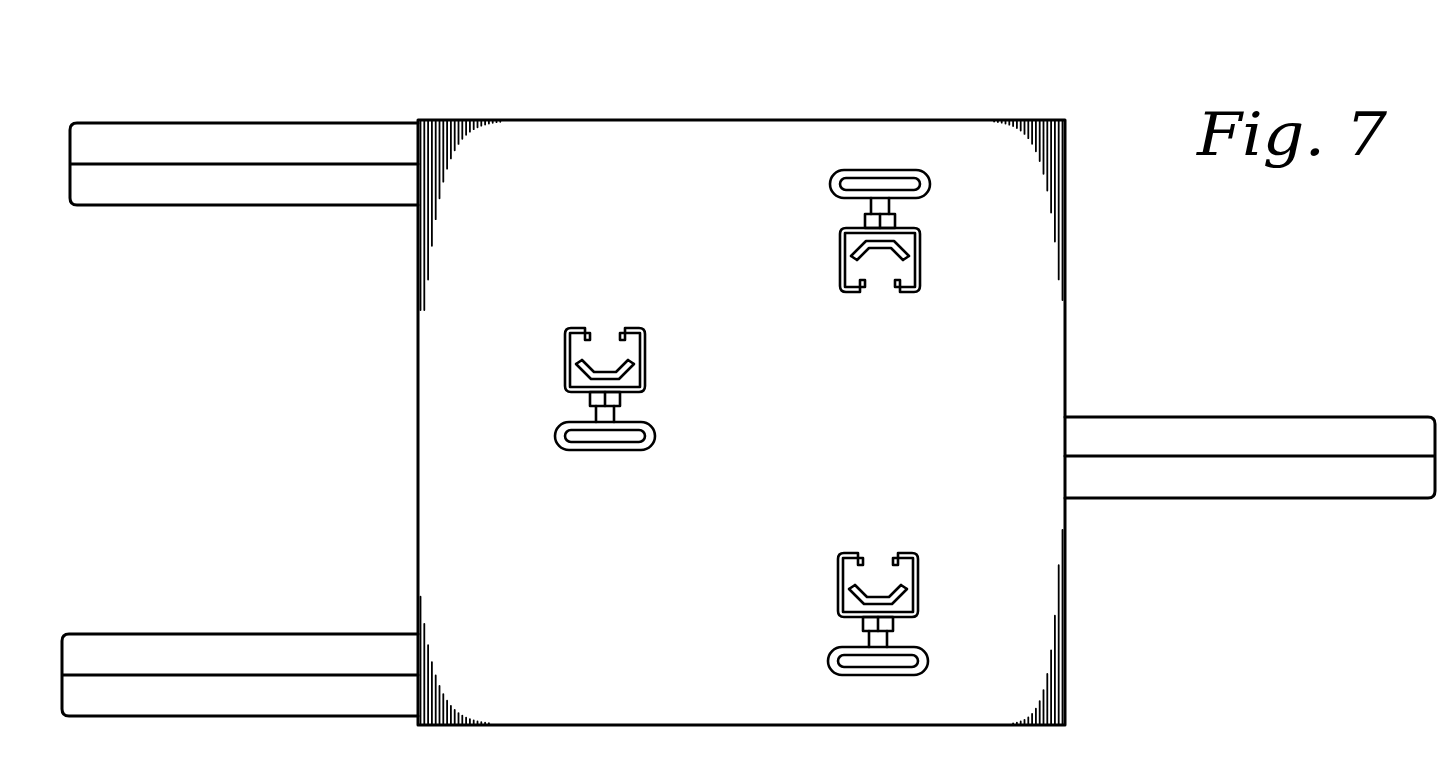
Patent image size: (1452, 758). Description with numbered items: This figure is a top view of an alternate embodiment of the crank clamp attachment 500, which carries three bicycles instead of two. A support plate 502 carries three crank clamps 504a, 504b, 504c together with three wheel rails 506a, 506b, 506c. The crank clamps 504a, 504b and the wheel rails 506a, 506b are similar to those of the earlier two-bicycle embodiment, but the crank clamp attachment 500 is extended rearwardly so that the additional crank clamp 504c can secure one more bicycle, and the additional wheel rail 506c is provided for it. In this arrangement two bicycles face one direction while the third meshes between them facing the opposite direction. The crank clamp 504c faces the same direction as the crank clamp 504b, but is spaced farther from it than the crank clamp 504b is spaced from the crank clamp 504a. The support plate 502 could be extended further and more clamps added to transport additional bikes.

The crank clamp attachment 500 is at (874, 82).
The support plate 502 is at (601, 152).
The crank clamp 504a is at (928, 250).
The crank clamp 504b is at (548, 371).
The crank clamp 504c is at (930, 581).
The wheel rail 506a is at (160, 150).
The wheel rail 506b is at (1223, 437).
The wheel rail 506c is at (190, 653).